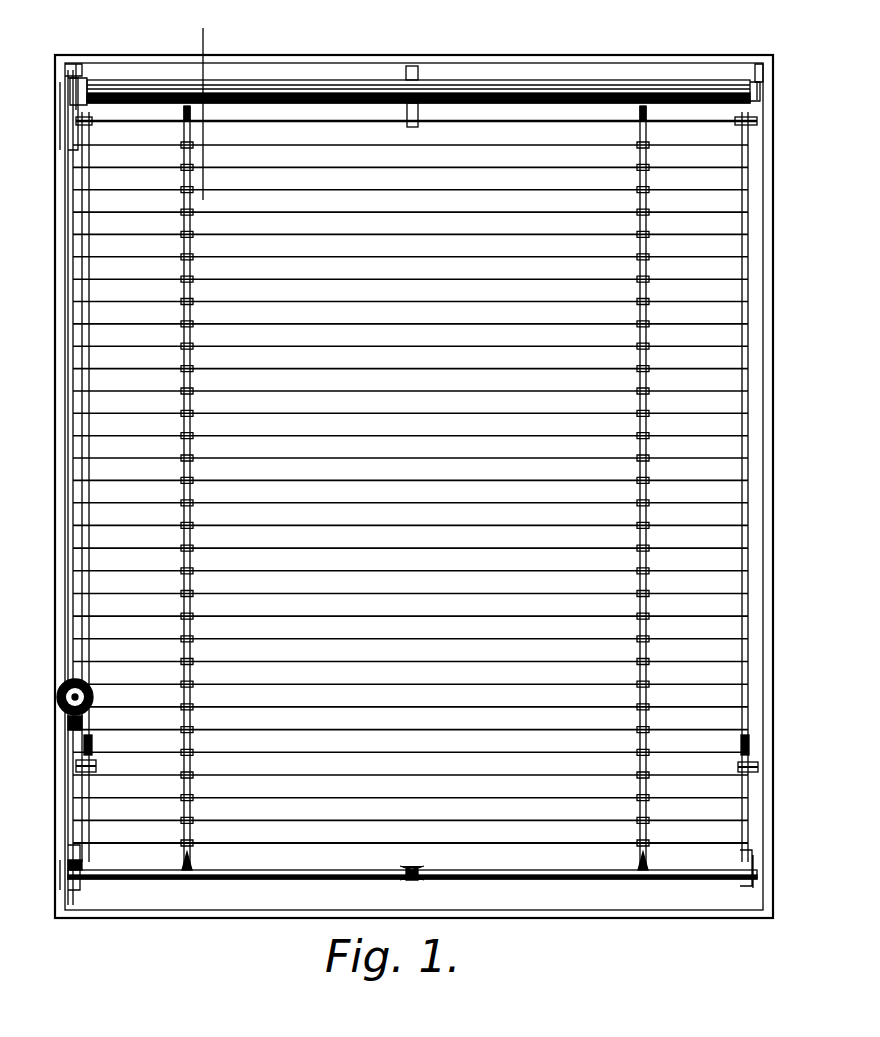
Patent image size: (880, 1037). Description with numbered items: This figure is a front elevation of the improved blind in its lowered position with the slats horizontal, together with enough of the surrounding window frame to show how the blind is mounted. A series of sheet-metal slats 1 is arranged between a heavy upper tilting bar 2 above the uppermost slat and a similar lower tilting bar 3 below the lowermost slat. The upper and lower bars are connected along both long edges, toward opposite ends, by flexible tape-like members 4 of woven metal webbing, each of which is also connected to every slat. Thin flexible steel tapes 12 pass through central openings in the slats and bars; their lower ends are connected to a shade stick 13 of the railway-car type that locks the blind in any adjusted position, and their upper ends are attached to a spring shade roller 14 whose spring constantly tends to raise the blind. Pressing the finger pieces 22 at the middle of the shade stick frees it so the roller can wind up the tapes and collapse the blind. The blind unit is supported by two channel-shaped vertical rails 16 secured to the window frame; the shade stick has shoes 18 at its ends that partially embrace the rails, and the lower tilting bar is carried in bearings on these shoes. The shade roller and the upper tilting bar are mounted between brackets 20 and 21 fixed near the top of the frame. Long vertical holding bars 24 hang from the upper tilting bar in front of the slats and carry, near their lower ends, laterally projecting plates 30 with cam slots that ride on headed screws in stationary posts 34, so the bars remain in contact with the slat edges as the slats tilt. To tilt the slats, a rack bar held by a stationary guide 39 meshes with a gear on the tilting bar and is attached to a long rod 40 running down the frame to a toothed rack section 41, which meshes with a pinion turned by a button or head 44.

The slats 1 is at (252, 570).
The upper tilting bar 2 is at (312, 134).
The lower tilting bar 3 is at (328, 841).
The flexible tape-like members 4 is at (168, 43).
The flexible band or tape 12 is at (182, 118).
The shade stick 13 is at (292, 872).
The spring shade roller 14 is at (500, 90).
The vertical rails 16 is at (64, 790).
The shoes 18 is at (82, 860).
The bracket 20 is at (70, 70).
The bracket 21 is at (746, 68).
The finger pieces 22 is at (428, 890).
The holding bars 24 is at (90, 520).
The laterally projecting plates 30 is at (90, 748).
The post 34 is at (96, 768).
The stationary guide 39 is at (70, 140).
The long rod 40 is at (66, 240).
The toothed or rack section 41 is at (70, 682).
The button or head 44 is at (62, 712).